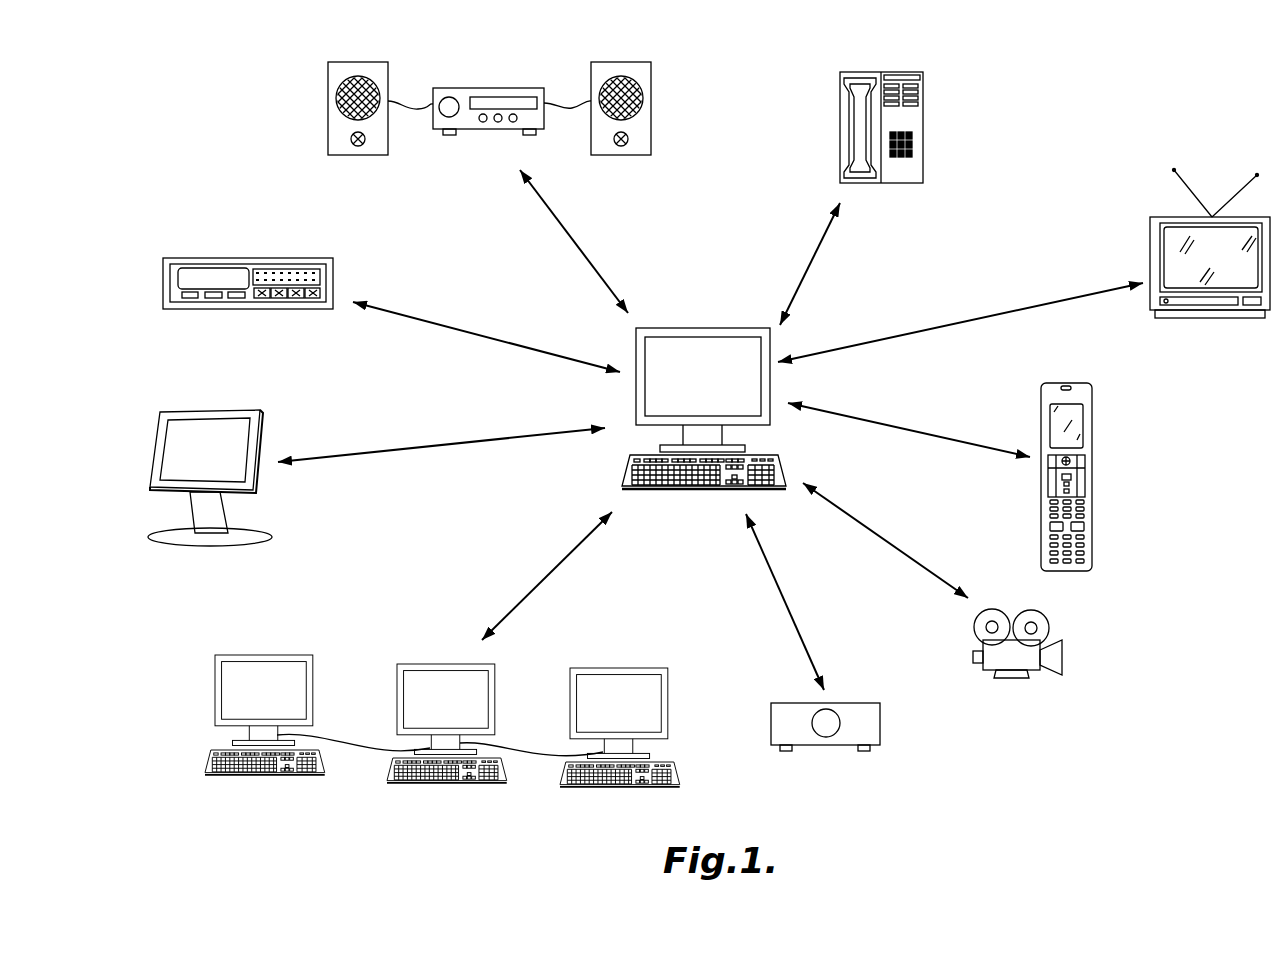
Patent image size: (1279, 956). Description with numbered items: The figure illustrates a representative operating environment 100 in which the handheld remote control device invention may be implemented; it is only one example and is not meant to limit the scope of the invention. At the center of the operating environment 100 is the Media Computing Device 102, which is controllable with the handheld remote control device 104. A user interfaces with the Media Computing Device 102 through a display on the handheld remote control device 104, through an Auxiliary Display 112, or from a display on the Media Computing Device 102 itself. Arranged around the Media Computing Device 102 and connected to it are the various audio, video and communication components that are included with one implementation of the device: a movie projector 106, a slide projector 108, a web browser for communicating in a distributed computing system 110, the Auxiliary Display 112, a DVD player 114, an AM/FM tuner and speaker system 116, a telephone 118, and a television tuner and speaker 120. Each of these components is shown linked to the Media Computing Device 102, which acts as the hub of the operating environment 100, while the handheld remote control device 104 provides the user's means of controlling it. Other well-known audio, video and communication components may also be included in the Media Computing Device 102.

The operating environment 100 is at (1188, 91).
The Media Computing Device 102 is at (697, 328).
The handheld remote control device 104 is at (1093, 416).
The movie projector 106 is at (1057, 645).
The slide projector 108 is at (880, 716).
The distributed computing system 110 is at (437, 664).
The Auxiliary Display 112 is at (235, 411).
The DVD player 114 is at (183, 258).
The AM/FM tuner and speaker system 116 is at (487, 129).
The telephone 118 is at (925, 133).
The television tuner and speaker 120 is at (1148, 243).